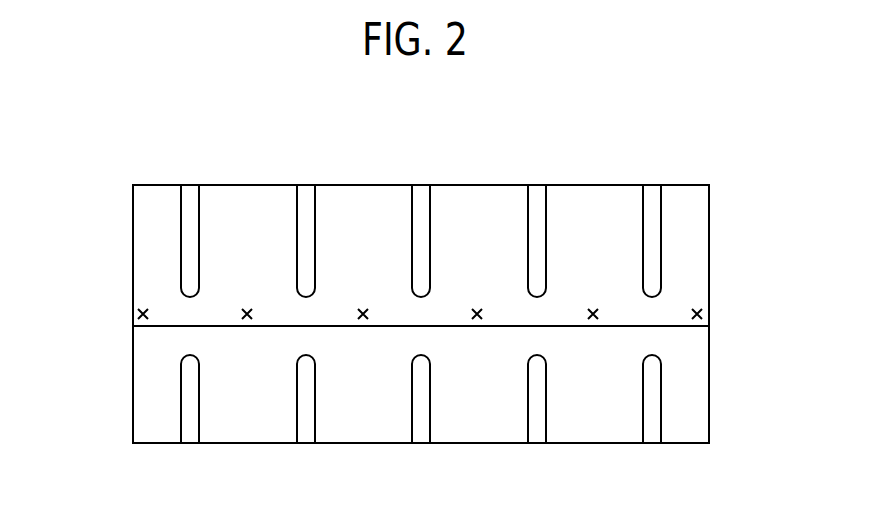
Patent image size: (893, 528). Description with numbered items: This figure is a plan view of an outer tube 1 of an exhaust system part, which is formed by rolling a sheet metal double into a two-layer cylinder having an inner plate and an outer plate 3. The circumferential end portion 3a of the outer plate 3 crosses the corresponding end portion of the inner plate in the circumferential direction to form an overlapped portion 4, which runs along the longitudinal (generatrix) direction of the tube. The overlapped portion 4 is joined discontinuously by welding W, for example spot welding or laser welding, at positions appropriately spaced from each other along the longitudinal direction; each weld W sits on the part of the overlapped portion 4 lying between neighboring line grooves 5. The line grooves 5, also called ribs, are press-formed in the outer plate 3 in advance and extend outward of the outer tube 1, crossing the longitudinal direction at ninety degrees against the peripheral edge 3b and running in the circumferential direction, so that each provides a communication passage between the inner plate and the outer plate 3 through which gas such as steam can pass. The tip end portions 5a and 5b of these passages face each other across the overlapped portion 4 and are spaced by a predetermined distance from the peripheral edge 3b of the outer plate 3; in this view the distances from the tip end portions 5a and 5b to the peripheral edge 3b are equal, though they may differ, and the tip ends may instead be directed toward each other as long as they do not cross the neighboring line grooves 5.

The outer tube 1 is at (228, 165).
The outer plate 3 is at (337, 203).
The circumferential end portion of the outer plate 3a is at (165, 313).
The peripheral edge of the outer plate 3b is at (662, 326).
The overlapped portion 4 is at (714, 317).
The line grooves 5 is at (485, 315).
The tip end portion 5a is at (655, 292).
The tip end portion 5b is at (650, 357).
The welding W is at (245, 320).